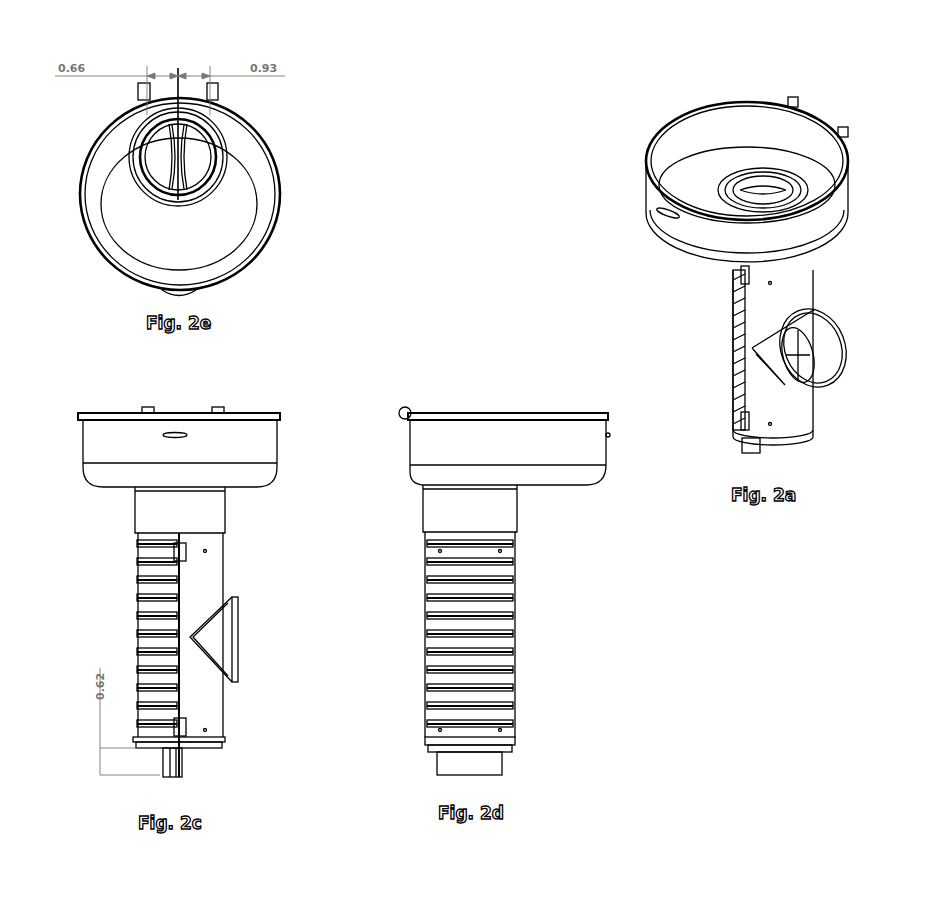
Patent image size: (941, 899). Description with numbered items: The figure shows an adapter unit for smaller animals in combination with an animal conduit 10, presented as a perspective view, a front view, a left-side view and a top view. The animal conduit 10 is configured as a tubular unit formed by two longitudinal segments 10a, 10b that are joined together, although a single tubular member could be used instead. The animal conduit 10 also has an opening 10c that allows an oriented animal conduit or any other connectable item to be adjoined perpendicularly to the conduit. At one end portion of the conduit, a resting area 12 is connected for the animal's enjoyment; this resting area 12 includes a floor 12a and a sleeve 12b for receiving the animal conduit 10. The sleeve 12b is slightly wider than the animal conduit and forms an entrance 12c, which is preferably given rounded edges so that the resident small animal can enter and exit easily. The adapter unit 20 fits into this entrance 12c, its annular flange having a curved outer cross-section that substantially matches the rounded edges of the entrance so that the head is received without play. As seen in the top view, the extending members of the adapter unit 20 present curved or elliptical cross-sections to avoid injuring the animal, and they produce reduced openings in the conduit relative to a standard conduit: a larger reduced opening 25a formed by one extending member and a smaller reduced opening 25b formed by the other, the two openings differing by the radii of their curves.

In FIG. 2C, the animal conduit 10 is at (277, 384).
In FIG. 2D, the animal conduit 10 is at (582, 384).
In FIG. 2A, the animal conduit 10 is at (640, 262).
In FIG. 2C, the longitudinal segment 10a is at (207, 578).
In FIG. 2A, the longitudinal segment 10a is at (780, 306).
In FIG. 2C, the longitudinal segment 10b is at (145, 608).
In FIG. 2D, the longitudinal segment 10b is at (500, 597).
In FIG. 2A, the longitudinal segment 10b is at (748, 348).
In FIG. 2C, the opening 10c is at (235, 648).
In FIG. 2A, the opening 10c is at (815, 372).
In FIG. 2E, the resting area 12 is at (183, 248).
In FIG. 2C, the resting area 12 is at (254, 454).
In FIG. 2D, the resting area 12 is at (497, 454).
In FIG. 2A, the resting area 12 is at (739, 138).
In FIG. 2E, the floor 12a is at (232, 222).
In FIG. 2C, the sleeve 12b is at (145, 513).
In FIG. 2A, the entrance 12c is at (720, 178).
In FIG. 2C, the adapter unit 20 is at (168, 763).
In FIG. 2D, the adapter unit 20 is at (445, 768).
In FIG. 2A, the adapter unit 20 is at (745, 450).
In FIG. 2E, the larger reduced opening 25a is at (192, 150).
In FIG. 2E, the smaller reduced opening 25b is at (152, 150).